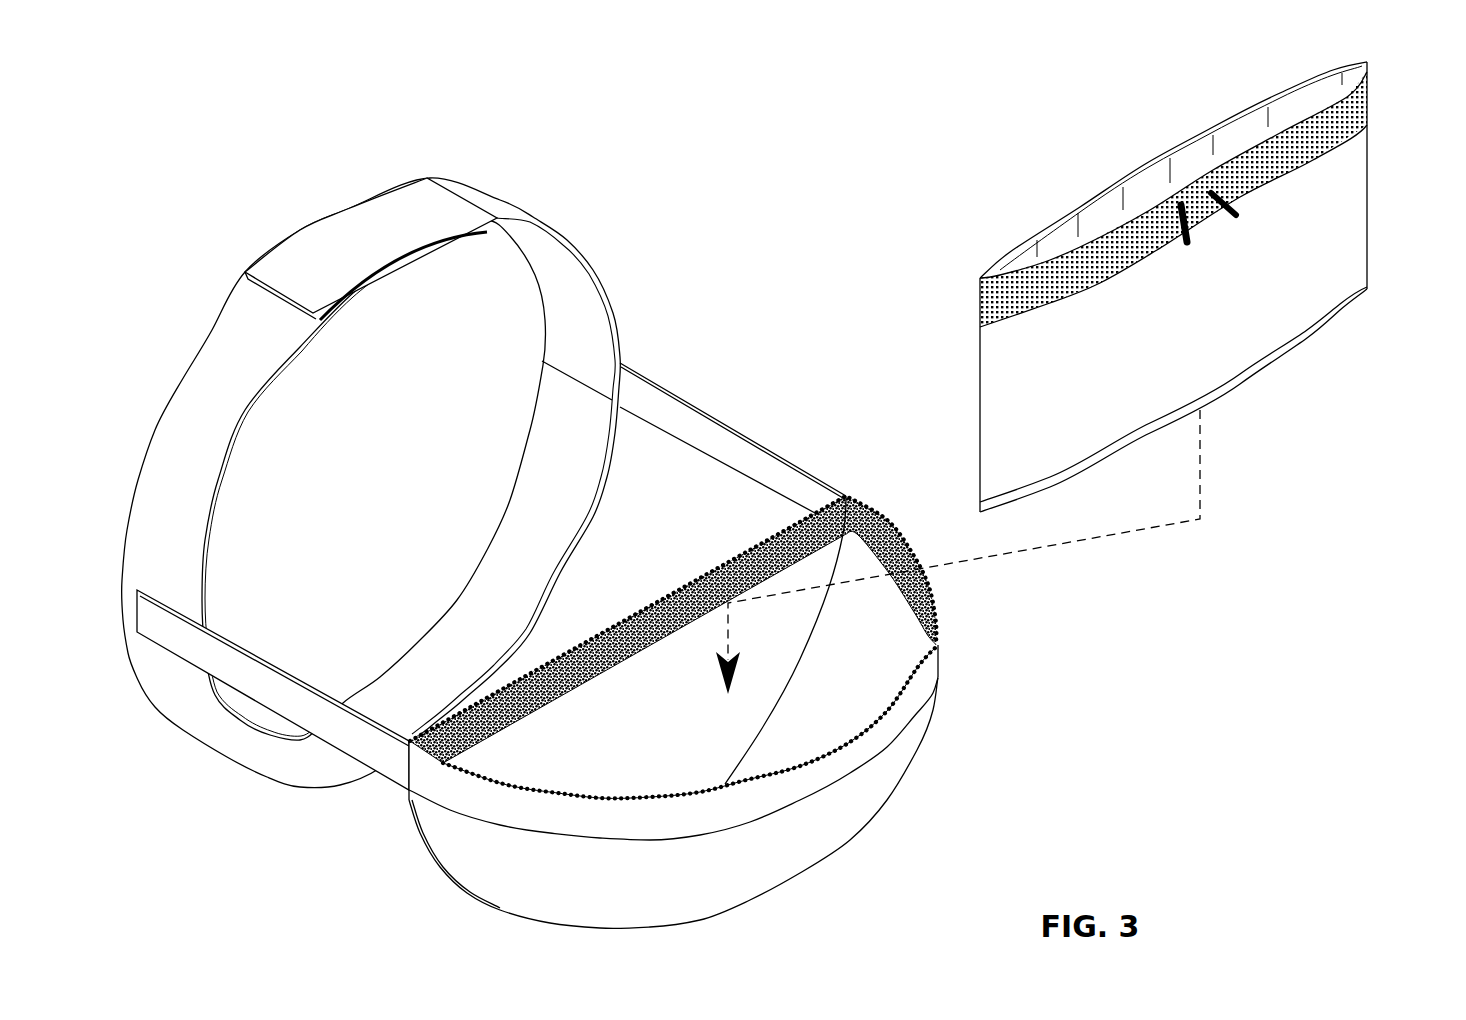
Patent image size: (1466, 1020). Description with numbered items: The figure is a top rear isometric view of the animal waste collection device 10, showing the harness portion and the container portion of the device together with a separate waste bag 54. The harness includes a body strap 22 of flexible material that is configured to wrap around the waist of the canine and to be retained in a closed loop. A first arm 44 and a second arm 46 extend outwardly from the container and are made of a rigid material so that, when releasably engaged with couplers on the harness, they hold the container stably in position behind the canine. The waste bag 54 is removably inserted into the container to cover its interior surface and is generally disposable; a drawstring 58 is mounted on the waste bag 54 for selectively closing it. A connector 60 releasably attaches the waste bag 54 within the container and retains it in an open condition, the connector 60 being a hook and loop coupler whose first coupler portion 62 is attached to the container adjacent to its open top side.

The animal waste collection device 10 is at (530, 500).
The body strap 22 is at (220, 390).
The first arm 44 is at (700, 410).
The second arm 46 is at (320, 710).
The waste bag 54 is at (1346, 91).
The drawstring 58 is at (1190, 243).
The connector 60 is at (864, 488).
The first coupler portion 62 is at (450, 740).